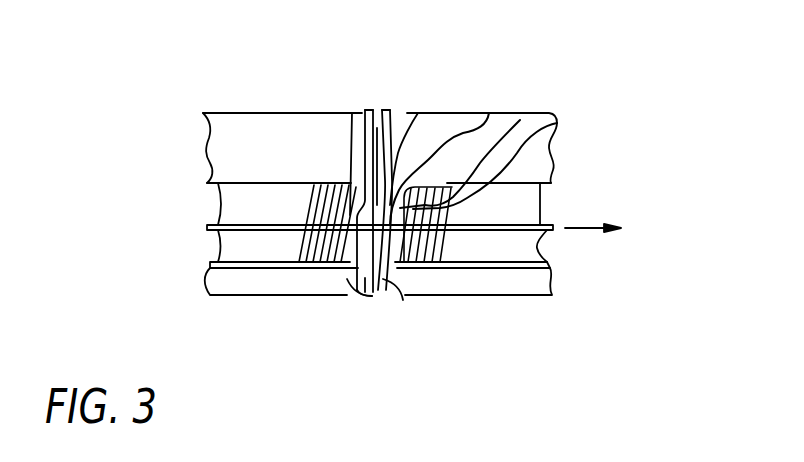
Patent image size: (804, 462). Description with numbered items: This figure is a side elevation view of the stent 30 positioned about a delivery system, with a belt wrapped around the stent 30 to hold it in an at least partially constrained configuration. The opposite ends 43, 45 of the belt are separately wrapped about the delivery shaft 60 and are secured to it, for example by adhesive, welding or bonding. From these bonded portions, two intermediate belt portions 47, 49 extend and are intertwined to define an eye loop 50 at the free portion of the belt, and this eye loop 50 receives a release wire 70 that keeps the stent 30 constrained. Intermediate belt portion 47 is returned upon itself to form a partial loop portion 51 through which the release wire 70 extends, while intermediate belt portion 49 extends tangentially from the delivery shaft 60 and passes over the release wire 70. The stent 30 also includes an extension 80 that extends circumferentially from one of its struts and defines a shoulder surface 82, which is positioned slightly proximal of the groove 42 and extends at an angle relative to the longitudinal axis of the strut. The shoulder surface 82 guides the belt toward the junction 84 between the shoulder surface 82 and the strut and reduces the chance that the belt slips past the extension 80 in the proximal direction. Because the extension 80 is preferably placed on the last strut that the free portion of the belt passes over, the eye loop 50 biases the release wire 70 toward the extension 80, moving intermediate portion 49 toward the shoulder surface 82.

The stent 30 is at (250, 84).
The groove 42 is at (397, 112).
The eye loop 50 is at (418, 113).
The junction 84 is at (489, 113).
The shoulder surface 82 is at (520, 120).
The extension 80 is at (557, 123).
The release wire 70 is at (518, 225).
The delivery shaft 60 is at (537, 248).
The belt end 43 is at (303, 250).
The belt end 45 is at (433, 247).
The partial loop portion 51 is at (340, 278).
The intermediate belt portion 47 is at (367, 278).
The intermediate belt portion 49 is at (380, 279).